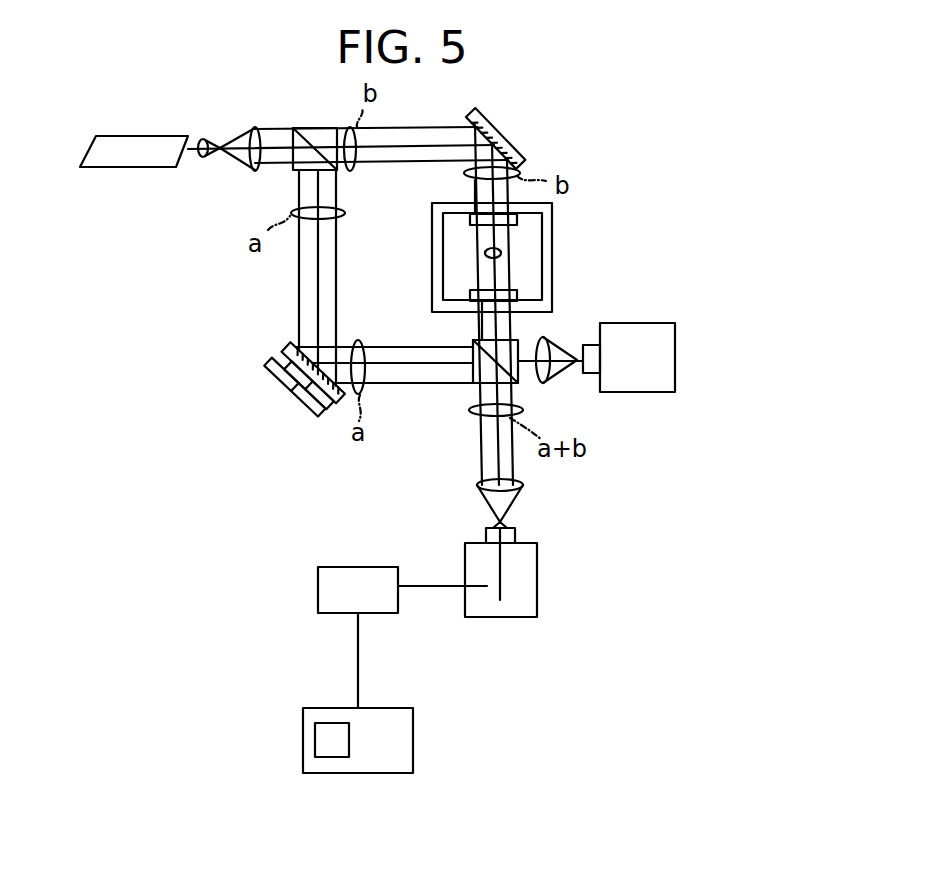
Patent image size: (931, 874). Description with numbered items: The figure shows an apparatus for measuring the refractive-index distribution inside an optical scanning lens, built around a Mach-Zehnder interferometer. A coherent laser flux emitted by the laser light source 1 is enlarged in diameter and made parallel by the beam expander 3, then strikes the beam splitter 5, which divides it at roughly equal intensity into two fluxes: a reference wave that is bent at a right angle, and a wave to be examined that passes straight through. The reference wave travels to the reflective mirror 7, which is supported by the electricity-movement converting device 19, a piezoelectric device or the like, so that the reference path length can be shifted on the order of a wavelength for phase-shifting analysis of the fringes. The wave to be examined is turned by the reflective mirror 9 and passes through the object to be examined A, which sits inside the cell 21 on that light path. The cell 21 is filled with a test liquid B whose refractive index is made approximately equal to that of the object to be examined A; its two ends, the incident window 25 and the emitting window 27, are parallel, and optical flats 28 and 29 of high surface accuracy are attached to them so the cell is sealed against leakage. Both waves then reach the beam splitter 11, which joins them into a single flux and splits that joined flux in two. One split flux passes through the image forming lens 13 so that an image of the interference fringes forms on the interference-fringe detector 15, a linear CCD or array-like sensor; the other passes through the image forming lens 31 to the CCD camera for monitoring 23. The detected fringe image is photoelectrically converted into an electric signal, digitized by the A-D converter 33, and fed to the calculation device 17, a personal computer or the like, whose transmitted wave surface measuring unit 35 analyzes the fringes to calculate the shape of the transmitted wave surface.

The laser light source 1 is at (126, 160).
The beam expander 3 is at (261, 173).
The beam splitter 5 is at (315, 126).
The reflective mirror 7 is at (293, 346).
The reflective mirror 9 is at (490, 126).
The beam splitter 11 is at (520, 340).
The image forming lens 13 is at (477, 485).
The interference-fringe detector 15 is at (525, 581).
The calculation device 17 is at (413, 722).
The electricity-movement converting device 19 is at (290, 398).
The cell 21 is at (441, 246).
The CCD camera for monitoring 23 is at (631, 324).
The incident window 25 is at (480, 206).
The emitting window 27 is at (487, 317).
The optical flat 28 is at (470, 219).
The optical flat 29 is at (470, 298).
The image forming lens 31 is at (522, 413).
The A-D converter 33 is at (368, 566).
The transmitted wave surface measuring unit 35 is at (330, 727).
The object to be examined A is at (503, 250).
The test liquid B is at (552, 270).